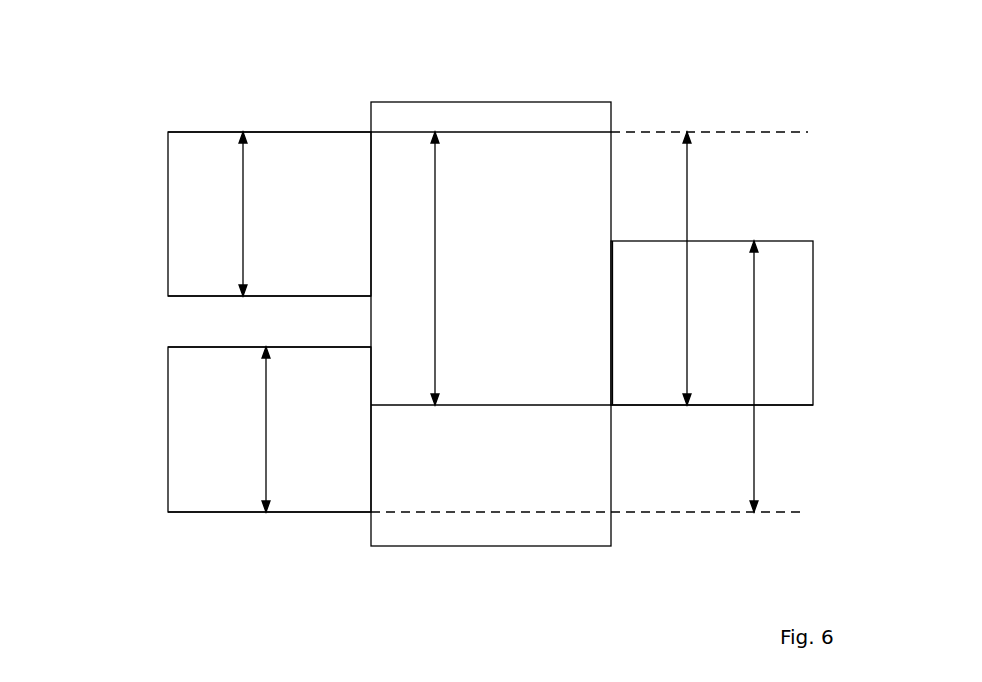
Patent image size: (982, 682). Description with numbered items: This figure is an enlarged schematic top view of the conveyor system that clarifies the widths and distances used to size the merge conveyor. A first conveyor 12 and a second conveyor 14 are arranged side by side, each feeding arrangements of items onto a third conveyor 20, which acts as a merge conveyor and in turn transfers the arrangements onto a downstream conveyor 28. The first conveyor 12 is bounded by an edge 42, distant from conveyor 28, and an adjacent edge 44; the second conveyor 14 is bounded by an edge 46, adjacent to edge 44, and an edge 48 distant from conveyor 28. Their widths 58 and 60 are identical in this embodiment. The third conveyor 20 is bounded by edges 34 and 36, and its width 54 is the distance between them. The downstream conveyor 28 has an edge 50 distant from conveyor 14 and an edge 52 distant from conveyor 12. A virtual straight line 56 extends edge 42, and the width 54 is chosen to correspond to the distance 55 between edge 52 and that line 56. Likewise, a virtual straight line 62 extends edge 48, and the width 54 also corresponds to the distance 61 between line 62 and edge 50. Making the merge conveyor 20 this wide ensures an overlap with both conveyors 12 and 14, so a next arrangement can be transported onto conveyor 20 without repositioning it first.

The first conveyor 12 is at (175, 198).
The second conveyor 14 is at (185, 416).
The third conveyor 20 is at (470, 152).
The conveyor 28 is at (653, 253).
The edge 34 is at (498, 132).
The edge 36 is at (478, 405).
The edge 42 is at (195, 132).
The edge 44 is at (190, 298).
The edge 46 is at (210, 347).
The edge 48 is at (220, 512).
The edge 50 is at (781, 241).
The edge 52 is at (722, 405).
The width of conveyor 20 54 is at (434, 252).
The distance 55 is at (687, 197).
The virtual straight line 56 is at (750, 132).
The width of conveyor 12 58 is at (243, 211).
The width of conveyor 14 60 is at (266, 452).
The distance 61 is at (754, 450).
The virtual straight line 62 is at (664, 512).